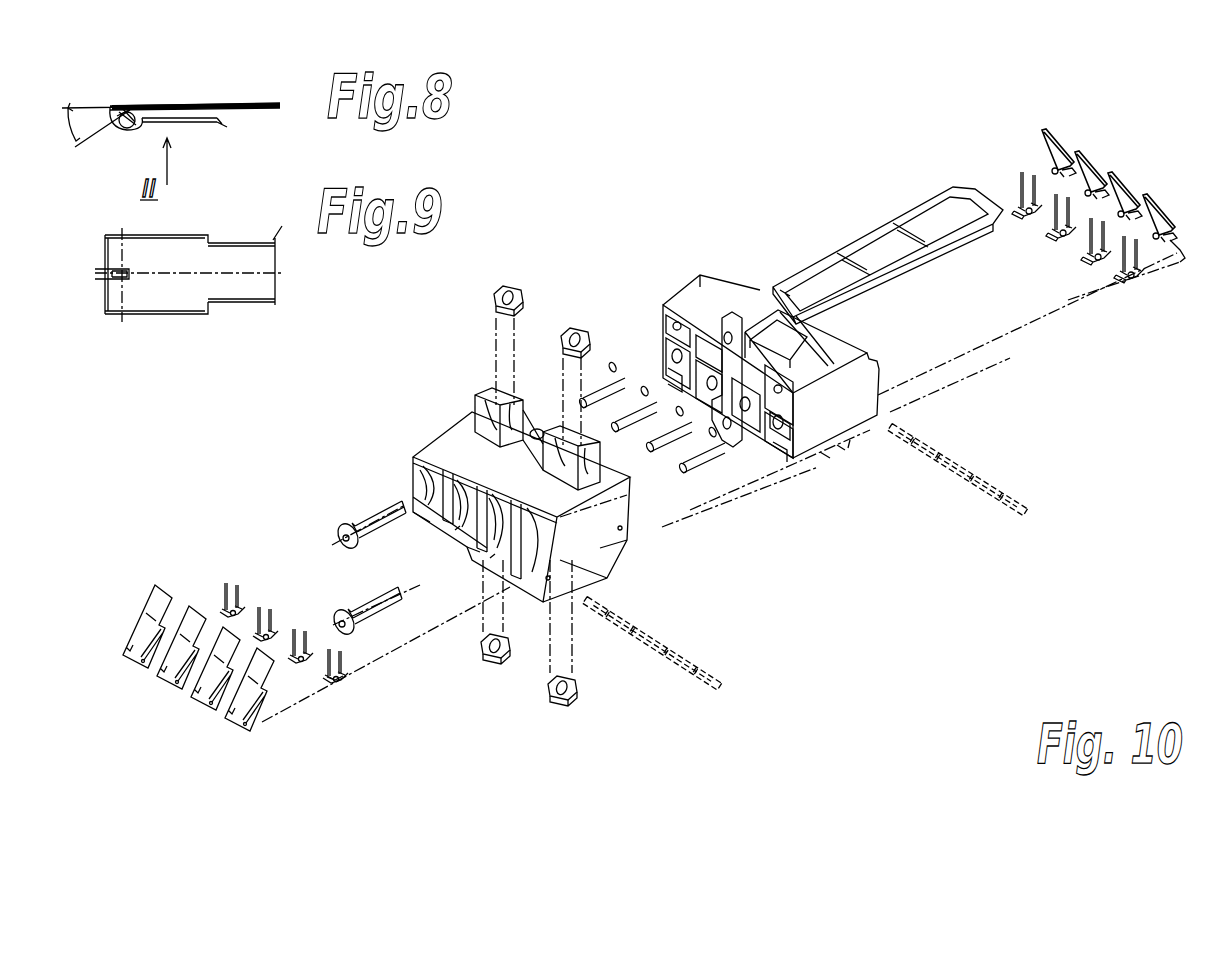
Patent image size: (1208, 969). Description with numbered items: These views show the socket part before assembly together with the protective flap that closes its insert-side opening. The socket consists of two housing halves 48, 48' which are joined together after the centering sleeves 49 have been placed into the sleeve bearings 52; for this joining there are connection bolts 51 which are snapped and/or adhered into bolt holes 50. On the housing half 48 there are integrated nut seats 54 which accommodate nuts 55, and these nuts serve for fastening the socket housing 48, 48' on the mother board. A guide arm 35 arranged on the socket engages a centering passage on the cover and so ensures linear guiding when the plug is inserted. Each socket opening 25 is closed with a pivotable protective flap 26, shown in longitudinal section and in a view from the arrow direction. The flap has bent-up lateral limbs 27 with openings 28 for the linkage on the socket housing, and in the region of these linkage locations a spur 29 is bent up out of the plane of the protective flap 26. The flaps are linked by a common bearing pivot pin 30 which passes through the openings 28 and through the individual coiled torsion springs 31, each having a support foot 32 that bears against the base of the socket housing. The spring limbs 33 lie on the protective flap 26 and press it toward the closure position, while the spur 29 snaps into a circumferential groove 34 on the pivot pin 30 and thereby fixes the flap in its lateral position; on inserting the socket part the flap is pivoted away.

In FIG. 10, the socket opening 25 is at (410, 470).
In FIG. 8, the protective flap 26 is at (258, 100).
In FIG. 9, the protective flap 26 is at (248, 285).
In FIG. 10, the protective flap 26 is at (142, 630).
In FIG. 8, the lateral limbs 27 is at (185, 123).
In FIG. 9, the lateral limbs 27 is at (168, 316).
In FIG. 8, the openings 28 is at (125, 131).
In FIG. 8, the spur 29 is at (125, 108).
In FIG. 9, the spur 29 is at (122, 286).
In FIG. 10, the bearing pivot pin 30 is at (722, 690).
In FIG. 10, the coiled torsion spring 31 is at (324, 684).
In FIG. 10, the support foot 32 is at (343, 671).
In FIG. 10, the spring limbs 33 is at (233, 578).
In FIG. 10, the circumferential groove 34 is at (670, 652).
In FIG. 10, the guide arm 35 is at (875, 225).
In FIG. 10, the housing half 48 is at (579, 507).
In FIG. 10, the housing half 48' is at (832, 368).
In FIG. 10, the centering sleeves 49 is at (715, 463).
In FIG. 10, the bolt holes 50 is at (728, 335).
In FIG. 10, the connection bolts 51 is at (368, 517).
In FIG. 10, the sleeve bearings 52 is at (793, 430).
In FIG. 10, the nut seats 54 is at (472, 407).
In FIG. 10, the nuts 55 is at (522, 290).